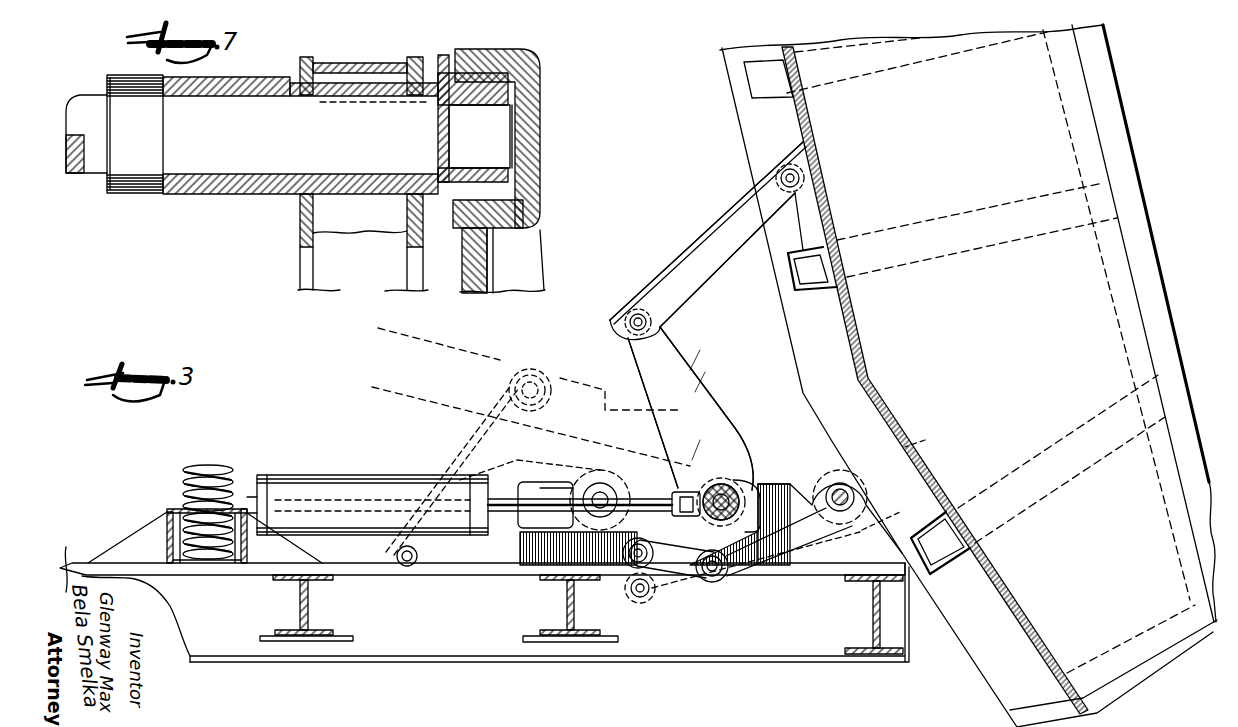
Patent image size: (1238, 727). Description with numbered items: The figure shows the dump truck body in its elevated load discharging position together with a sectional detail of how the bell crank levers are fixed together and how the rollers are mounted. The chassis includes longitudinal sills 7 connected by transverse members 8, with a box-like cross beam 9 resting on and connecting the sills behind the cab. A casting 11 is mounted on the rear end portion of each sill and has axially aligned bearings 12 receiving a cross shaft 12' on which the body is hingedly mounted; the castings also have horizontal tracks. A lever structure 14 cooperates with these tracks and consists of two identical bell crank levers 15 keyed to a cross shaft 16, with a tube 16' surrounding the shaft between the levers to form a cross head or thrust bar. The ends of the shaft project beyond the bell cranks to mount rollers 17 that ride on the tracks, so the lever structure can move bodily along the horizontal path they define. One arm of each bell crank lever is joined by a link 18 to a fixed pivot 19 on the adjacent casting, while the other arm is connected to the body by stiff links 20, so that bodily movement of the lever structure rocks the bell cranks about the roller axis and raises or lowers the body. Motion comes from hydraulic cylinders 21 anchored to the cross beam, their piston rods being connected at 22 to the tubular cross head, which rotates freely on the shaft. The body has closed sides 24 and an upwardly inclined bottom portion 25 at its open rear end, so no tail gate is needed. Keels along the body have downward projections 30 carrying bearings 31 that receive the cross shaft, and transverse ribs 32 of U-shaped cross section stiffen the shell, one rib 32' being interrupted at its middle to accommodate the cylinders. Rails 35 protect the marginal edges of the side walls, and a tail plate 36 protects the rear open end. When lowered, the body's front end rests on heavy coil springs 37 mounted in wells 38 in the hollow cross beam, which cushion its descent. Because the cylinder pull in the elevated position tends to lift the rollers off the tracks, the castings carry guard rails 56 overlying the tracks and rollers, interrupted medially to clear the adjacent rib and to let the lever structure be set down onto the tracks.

In FIG. 3, the longitudinal sill 7 is at (751, 642).
In FIG. 3, the transverse member 8 is at (309, 606).
In FIG. 3, the box-like cross beam 9 is at (170, 511).
In FIG. 7, the casting 11 is at (528, 264).
In FIG. 3, the casting 11 is at (799, 483).
In FIG. 3, the bearing 12 is at (793, 509).
In FIG. 3, the cross shaft 12' is at (859, 497).
In FIG. 3, the lever structure 14 is at (637, 377).
In FIG. 7, the bell crank lever 15 is at (303, 78).
In FIG. 3, the bell crank lever 15 is at (688, 360).
In FIG. 7, the cross shaft 16 is at (76, 123).
In FIG. 3, the cross shaft 16 is at (741, 488).
In FIG. 7, the tube 16' is at (124, 122).
In FIG. 3, the tube 16' is at (740, 476).
In FIG. 7, the roller 17 is at (445, 54).
In FIG. 3, the link 18 is at (696, 576).
In FIG. 7, the fixed pivot 19 is at (492, 196).
In FIG. 3, the fixed pivot 19 is at (719, 577).
In FIG. 3, the stiff link 20 is at (680, 278).
In FIG. 3, the hydraulic cylinder 21 is at (318, 500).
In FIG. 3, the piston rod connection 22 is at (678, 504).
In FIG. 3, the closed side 24 is at (1096, 282).
In FIG. 3, the upwardly inclined bottom portion 25 is at (866, 327).
In FIG. 3, the downward projection 30 is at (892, 515).
In FIG. 3, the bearing 31 is at (926, 435).
In FIG. 3, the rib 32 is at (910, 389).
In FIG. 3, the rib 32' is at (806, 80).
In FIG. 3, the rail 35 is at (1112, 112).
In FIG. 3, the tail plate 36 is at (1138, 664).
In FIG. 3, the coil spring 37 is at (224, 480).
In FIG. 3, the well 38 is at (187, 566).
In FIG. 7, the guard rail 56 is at (500, 49).
In FIG. 3, the guard rail 56 is at (543, 481).